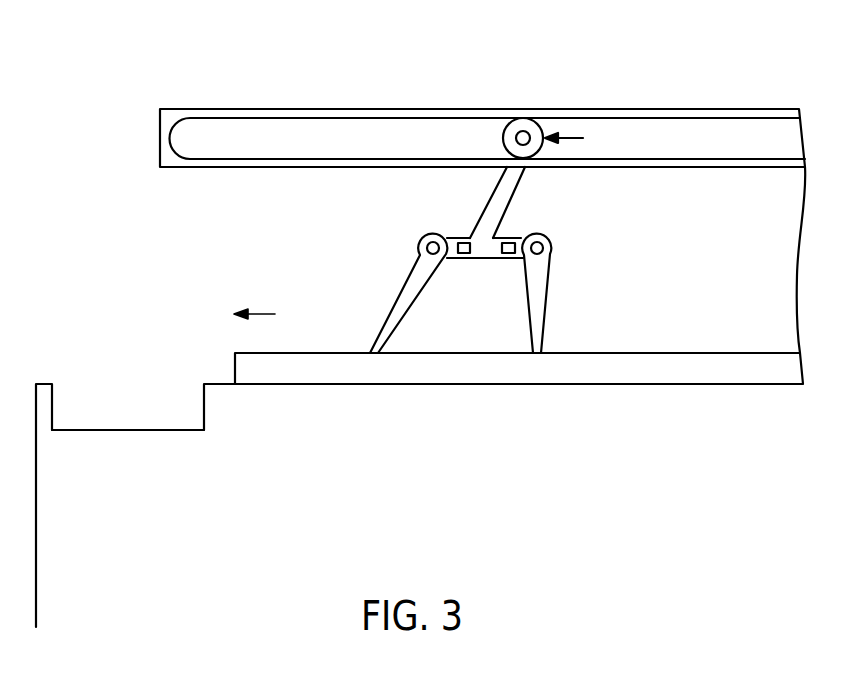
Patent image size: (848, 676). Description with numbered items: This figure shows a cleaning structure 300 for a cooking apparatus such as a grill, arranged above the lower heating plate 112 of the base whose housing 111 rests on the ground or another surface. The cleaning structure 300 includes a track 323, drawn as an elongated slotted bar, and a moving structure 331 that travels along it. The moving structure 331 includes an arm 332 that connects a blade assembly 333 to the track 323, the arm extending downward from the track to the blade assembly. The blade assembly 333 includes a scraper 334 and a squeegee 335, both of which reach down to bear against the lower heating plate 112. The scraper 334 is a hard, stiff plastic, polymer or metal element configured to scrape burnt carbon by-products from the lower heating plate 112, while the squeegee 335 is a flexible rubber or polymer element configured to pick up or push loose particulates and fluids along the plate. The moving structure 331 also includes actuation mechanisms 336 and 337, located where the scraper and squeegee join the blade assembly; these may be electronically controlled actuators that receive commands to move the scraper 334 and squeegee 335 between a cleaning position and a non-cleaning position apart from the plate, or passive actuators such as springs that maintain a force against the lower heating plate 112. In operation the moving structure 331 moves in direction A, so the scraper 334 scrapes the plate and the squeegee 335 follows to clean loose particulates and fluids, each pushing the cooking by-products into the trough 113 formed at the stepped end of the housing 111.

The cleaning structure 300 is at (638, 40).
The track 323 is at (316, 109).
The moving structure 331 is at (711, 236).
The arm 332 is at (505, 202).
The blade assembly 333 is at (591, 307).
The scraper 334 is at (403, 278).
The squeegee 335 is at (547, 275).
The actuation mechanism 336 is at (462, 243).
The actuation mechanism 337 is at (512, 248).
The lower heating plate 112 is at (592, 384).
The housing 111 is at (194, 505).
The trough 113 is at (155, 430).